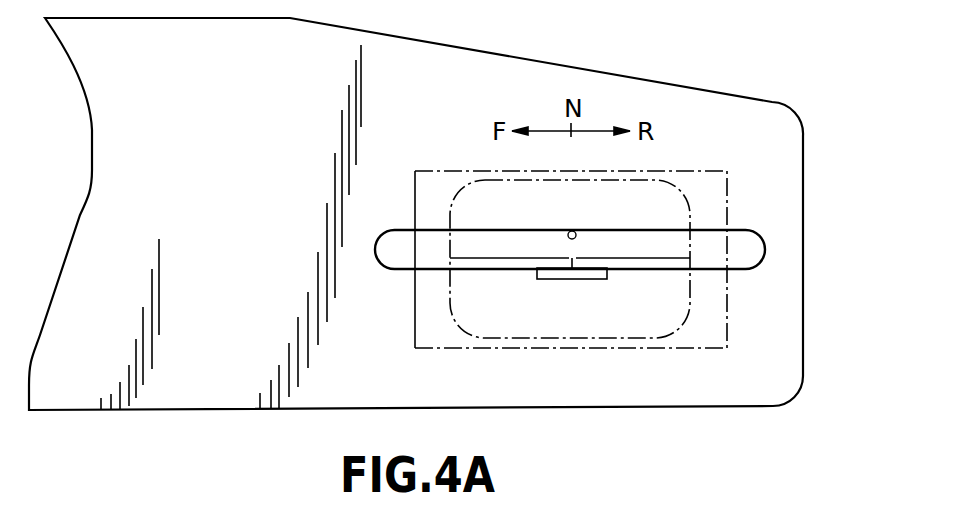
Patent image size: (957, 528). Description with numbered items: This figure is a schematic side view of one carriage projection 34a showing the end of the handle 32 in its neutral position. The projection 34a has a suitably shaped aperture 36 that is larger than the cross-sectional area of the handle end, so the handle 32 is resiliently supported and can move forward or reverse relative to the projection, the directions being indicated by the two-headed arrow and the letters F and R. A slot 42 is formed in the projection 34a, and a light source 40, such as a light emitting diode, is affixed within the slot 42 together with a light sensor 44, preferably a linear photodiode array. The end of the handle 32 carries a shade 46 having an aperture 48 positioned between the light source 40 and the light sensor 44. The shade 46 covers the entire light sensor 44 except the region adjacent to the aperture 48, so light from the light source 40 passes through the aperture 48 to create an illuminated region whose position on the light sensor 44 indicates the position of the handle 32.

The projection 34a is at (251, 249).
The handle 32 is at (676, 197).
The aperture 36 is at (728, 318).
The slot 42 is at (760, 229).
The light source 40 is at (574, 229).
The light sensor 44 is at (565, 276).
The shade 46 is at (662, 262).
The aperture 48 is at (570, 262).